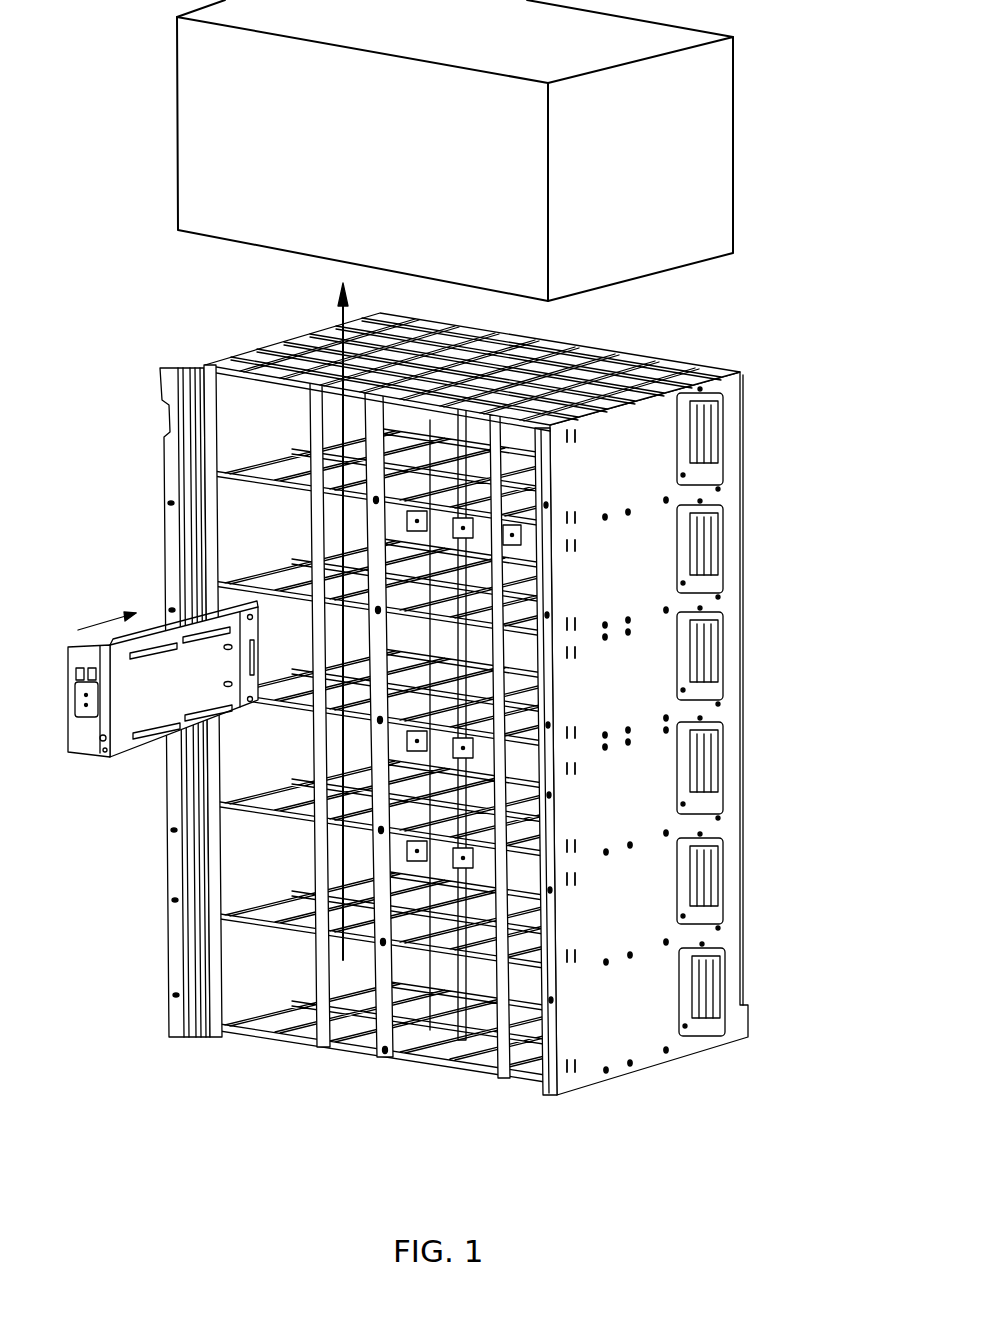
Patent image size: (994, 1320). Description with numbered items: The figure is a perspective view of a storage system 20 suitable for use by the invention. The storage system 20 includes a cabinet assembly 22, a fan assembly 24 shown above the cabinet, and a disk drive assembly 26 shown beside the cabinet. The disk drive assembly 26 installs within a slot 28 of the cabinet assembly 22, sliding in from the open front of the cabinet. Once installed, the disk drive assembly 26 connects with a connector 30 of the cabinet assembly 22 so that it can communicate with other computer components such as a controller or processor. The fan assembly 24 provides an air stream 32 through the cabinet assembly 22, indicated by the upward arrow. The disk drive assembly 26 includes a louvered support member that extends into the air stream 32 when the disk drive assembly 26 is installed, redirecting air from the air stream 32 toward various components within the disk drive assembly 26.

The storage system 20 is at (457, 547).
The cabinet assembly 22 is at (448, 704).
The fan assembly 24 is at (731, 236).
The disk drive assembly 26 is at (72, 763).
The slot 28 is at (265, 603).
The connector 30 is at (706, 432).
The air stream 32 is at (340, 308).